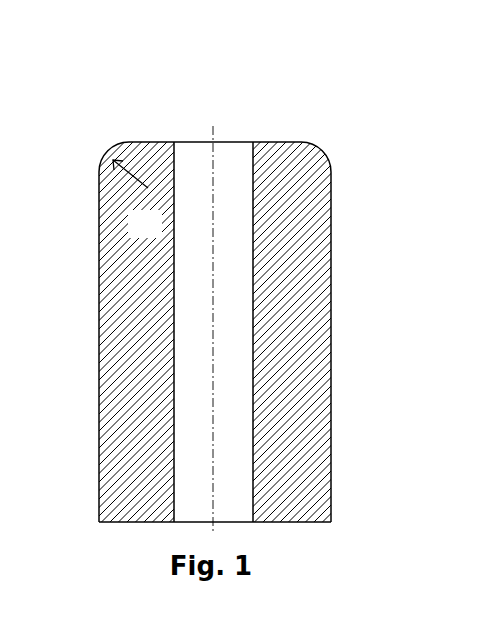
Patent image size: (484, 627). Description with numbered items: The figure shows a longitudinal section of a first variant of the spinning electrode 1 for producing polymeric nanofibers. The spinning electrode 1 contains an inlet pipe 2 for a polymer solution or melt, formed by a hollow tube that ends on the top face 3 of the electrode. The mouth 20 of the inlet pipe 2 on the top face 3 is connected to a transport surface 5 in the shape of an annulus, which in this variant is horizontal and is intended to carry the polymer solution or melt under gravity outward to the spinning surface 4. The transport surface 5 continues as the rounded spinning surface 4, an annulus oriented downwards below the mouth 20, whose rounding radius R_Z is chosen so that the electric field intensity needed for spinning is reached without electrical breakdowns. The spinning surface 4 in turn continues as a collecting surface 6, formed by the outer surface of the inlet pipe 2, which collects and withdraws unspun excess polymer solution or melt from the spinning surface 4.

The spinning electrode 1 is at (242, 274).
The inlet pipe 2 is at (127, 339).
The top face 3 is at (123, 132).
The spinning surface 4 is at (315, 150).
The transport surface 5 is at (278, 135).
The collecting surface 6 is at (333, 298).
The mouth 20 is at (183, 133).